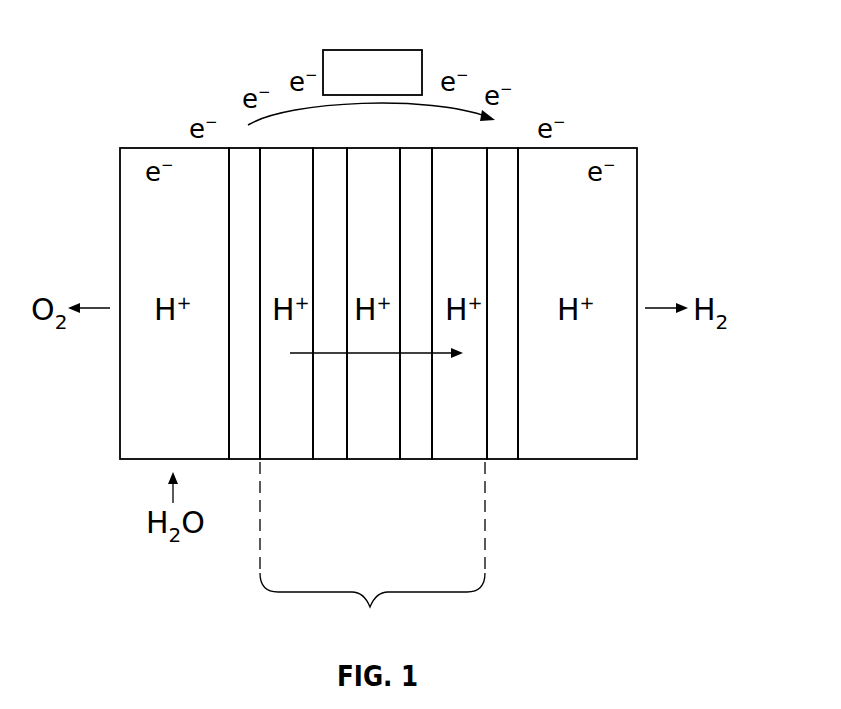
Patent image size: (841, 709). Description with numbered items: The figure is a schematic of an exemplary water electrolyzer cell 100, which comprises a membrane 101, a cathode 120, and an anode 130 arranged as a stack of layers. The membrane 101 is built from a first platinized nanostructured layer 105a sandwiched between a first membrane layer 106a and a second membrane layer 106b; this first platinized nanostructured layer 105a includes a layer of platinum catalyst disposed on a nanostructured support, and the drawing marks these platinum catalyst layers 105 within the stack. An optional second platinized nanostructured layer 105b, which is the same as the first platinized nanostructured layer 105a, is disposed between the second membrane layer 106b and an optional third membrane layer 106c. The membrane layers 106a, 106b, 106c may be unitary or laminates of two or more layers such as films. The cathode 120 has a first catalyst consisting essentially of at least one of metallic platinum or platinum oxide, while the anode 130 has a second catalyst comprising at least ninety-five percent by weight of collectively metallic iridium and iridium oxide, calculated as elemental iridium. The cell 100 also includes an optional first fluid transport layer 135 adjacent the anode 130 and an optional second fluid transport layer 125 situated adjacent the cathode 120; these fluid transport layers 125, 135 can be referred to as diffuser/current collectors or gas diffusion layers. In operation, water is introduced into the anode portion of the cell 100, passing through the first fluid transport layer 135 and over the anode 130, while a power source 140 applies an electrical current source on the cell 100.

The water electrolyzer cell 100 is at (648, 36).
The membrane 101 is at (372, 552).
The platinum catalyst layer 105 is at (418, 163).
The first platinized nanostructured layer 105a is at (332, 448).
The second platinized nanostructured layer 105b is at (415, 448).
The first membrane layer 106a is at (290, 448).
The second membrane layer 106b is at (373, 448).
The third membrane layer 106c is at (462, 448).
The cathode 120 is at (502, 448).
The second fluid transport layer 125 is at (583, 421).
The anode 130 is at (249, 448).
The first fluid transport layer 135 is at (167, 436).
The power source 140 is at (388, 50).